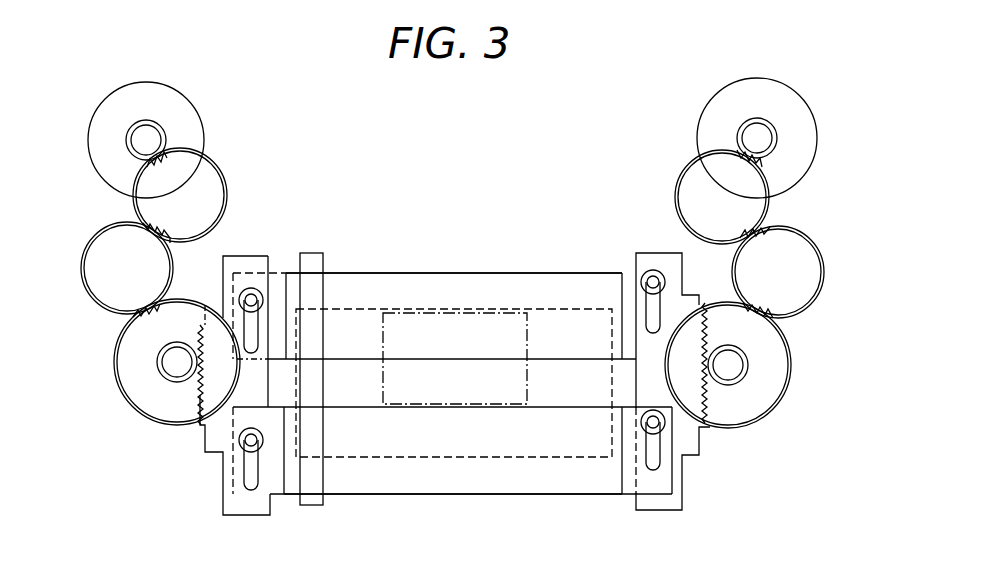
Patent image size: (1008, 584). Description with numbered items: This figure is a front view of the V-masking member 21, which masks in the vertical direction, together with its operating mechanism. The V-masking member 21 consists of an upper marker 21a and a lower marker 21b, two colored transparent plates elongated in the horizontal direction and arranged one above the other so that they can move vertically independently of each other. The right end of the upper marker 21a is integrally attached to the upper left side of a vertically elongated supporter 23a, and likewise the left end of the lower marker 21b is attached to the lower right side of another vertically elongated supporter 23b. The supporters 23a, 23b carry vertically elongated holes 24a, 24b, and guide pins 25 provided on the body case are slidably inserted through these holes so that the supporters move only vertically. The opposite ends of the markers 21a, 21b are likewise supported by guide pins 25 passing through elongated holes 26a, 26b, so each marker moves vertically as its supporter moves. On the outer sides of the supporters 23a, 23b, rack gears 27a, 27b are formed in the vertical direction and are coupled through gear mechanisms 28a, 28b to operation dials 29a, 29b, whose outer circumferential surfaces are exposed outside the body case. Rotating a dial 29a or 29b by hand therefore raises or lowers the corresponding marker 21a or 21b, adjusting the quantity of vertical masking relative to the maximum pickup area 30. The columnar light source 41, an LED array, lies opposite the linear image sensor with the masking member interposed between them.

The V-masking member 21 is at (410, 272).
The upper marker 21a is at (472, 277).
The lower marker 21b is at (478, 496).
The supporter 23a is at (672, 514).
The supporter 23b is at (253, 518).
The elongated hole 24a is at (660, 312).
The elongated hole 24b is at (248, 464).
The guide pin 25 is at (251, 288).
The elongated hole 26a is at (250, 328).
The elongated hole 26b is at (660, 445).
The rack gear 27a is at (715, 402).
The rack gear 27b is at (193, 398).
The gear mechanism 28a is at (805, 230).
The gear mechanism 28b is at (102, 230).
The operation dial 29a is at (752, 98).
The operation dial 29b is at (153, 93).
The maximum pickup area 30 is at (528, 330).
The columnar light source 41 is at (318, 258).